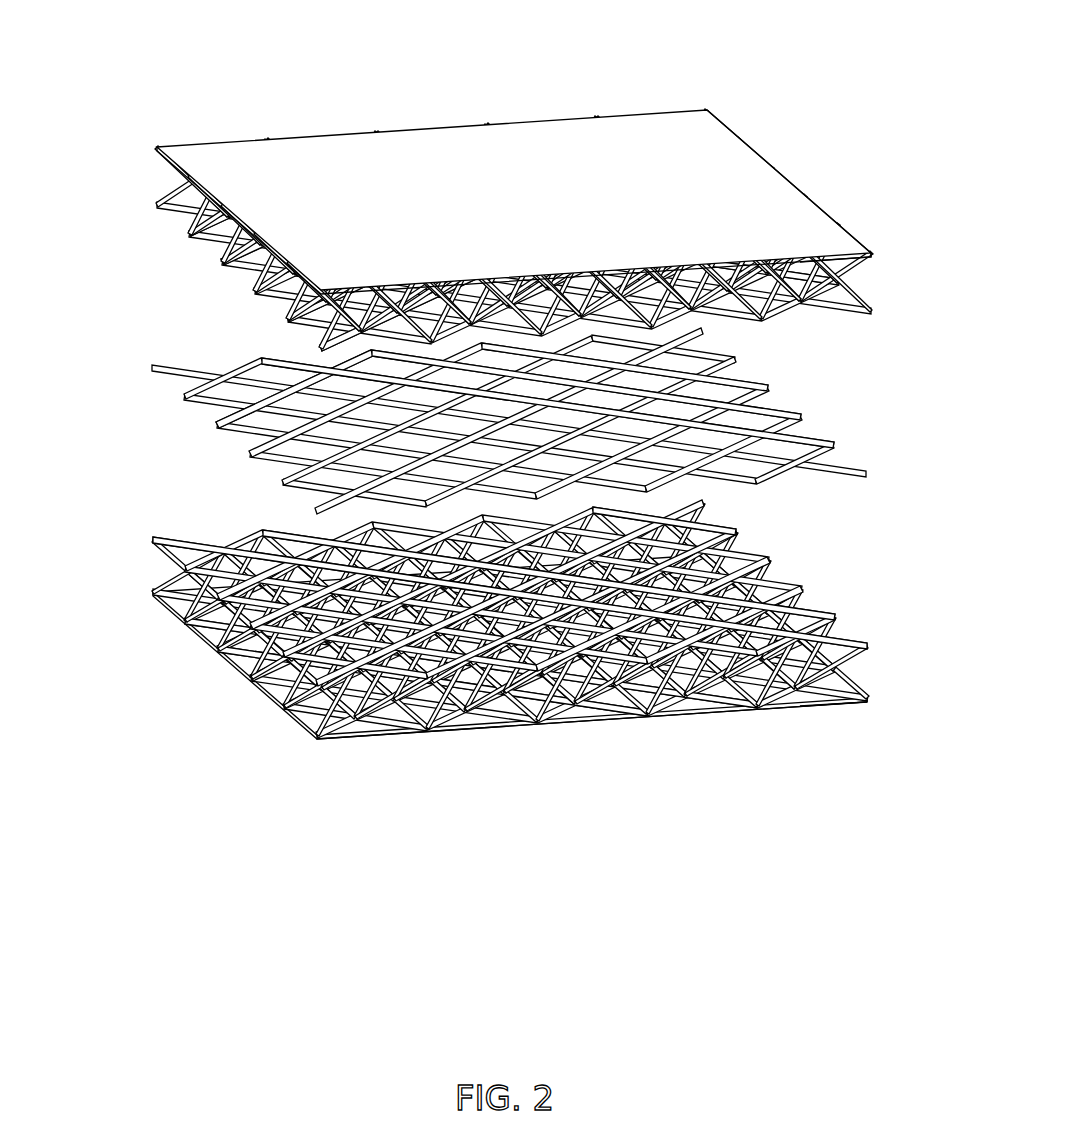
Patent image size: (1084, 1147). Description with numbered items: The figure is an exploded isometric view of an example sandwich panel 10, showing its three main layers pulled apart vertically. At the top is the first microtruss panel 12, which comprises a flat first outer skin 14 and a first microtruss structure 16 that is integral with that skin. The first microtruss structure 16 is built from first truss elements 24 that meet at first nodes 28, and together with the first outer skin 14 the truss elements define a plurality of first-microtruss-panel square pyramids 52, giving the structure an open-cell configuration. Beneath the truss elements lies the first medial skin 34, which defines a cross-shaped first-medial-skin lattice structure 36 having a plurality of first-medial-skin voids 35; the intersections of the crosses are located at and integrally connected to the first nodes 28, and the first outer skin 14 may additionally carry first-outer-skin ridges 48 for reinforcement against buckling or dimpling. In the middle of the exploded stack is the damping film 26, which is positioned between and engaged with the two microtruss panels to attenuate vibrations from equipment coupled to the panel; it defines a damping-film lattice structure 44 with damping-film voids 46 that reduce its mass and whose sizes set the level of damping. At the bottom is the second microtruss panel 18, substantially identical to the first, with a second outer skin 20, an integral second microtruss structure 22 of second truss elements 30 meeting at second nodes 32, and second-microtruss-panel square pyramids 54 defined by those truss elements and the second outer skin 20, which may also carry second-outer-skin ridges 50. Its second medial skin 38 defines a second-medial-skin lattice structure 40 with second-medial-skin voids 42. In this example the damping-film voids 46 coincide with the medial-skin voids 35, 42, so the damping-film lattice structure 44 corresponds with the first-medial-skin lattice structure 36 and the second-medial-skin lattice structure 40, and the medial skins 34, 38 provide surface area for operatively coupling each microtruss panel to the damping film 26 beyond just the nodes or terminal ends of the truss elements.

The sandwich panel 10 is at (500, 423).
The first microtruss panel 12 is at (613, 145).
The first outer skin 14 is at (722, 168).
The first microtruss structure 16 is at (887, 252).
The second microtruss panel 18 is at (330, 748).
The second outer skin 20 is at (443, 738).
The second microtruss structure 22 is at (500, 658).
The first truss elements 24 is at (861, 274).
The damping film 26 is at (147, 369).
The first nodes 28 is at (688, 303).
The second truss elements 30 is at (871, 686).
The second nodes 32 is at (308, 660).
The first medial skin 34 is at (190, 236).
The first-medial-skin voids 35 is at (283, 316).
The first-medial-skin lattice structure 36 is at (223, 267).
The second medial skin 38 is at (147, 536).
The second-medial-skin lattice structure 40 is at (770, 520).
The second-medial-skin voids 42 is at (795, 610).
The damping-film lattice structure 44 is at (215, 428).
The damping-film voids 46 is at (742, 413).
The first-outer-skin ridges 48 is at (742, 268).
The second-outer-skin ridges 50 is at (677, 702).
The first-microtruss-panel square pyramids 52 is at (318, 347).
The second-microtruss-panel square pyramids 54 is at (585, 690).